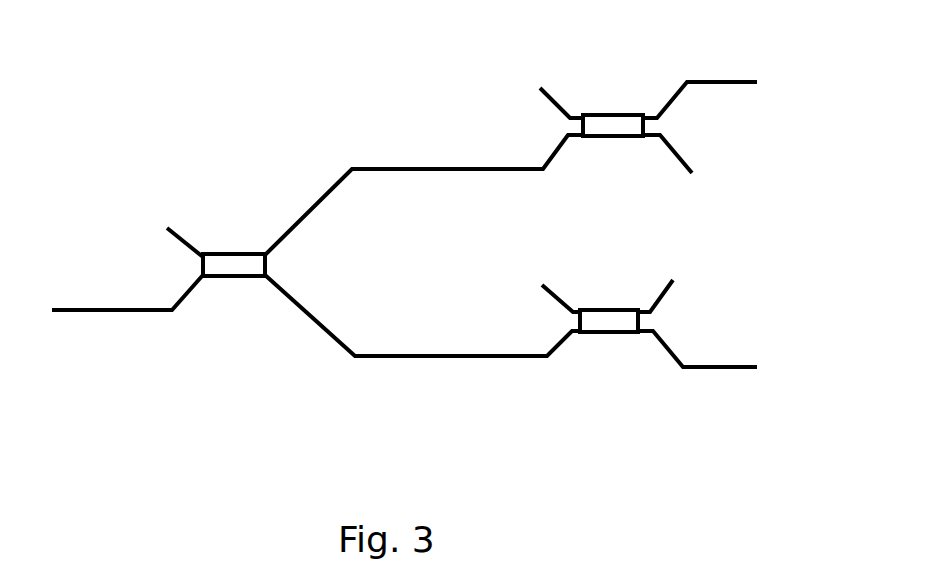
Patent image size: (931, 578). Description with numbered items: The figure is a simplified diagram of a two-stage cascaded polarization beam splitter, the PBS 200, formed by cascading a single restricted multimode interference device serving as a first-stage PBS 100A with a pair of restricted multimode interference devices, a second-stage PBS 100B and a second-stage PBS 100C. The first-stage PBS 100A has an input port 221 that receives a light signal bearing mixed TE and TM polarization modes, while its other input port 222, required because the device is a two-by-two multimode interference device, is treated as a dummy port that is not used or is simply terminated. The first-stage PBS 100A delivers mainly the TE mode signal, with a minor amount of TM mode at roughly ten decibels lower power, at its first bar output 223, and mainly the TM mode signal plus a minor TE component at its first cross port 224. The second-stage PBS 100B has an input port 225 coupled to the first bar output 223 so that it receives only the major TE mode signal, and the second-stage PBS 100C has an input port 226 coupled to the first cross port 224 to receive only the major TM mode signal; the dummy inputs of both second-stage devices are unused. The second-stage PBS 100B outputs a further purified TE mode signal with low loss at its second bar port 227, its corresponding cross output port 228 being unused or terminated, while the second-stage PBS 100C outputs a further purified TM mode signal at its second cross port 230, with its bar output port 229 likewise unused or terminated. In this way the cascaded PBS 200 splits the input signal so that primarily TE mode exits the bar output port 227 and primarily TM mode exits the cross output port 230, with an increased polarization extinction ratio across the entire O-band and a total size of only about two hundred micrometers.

The cascaded polarization beam splitter 200 is at (362, 84).
The input port 221 is at (80, 315).
The input port 222 is at (170, 225).
The first bar output 223 is at (300, 299).
The first cross port 224 is at (340, 177).
The input port 225 is at (557, 340).
The input port 226 is at (553, 148).
The second bar port 227 is at (668, 355).
The cross output port 228 is at (667, 290).
The bar output port 229 is at (675, 163).
The second cross port 230 is at (673, 103).
The first-stage PBS 100A is at (222, 282).
The second-stage PBS 100B is at (595, 337).
The second-stage PBS 100C is at (600, 140).